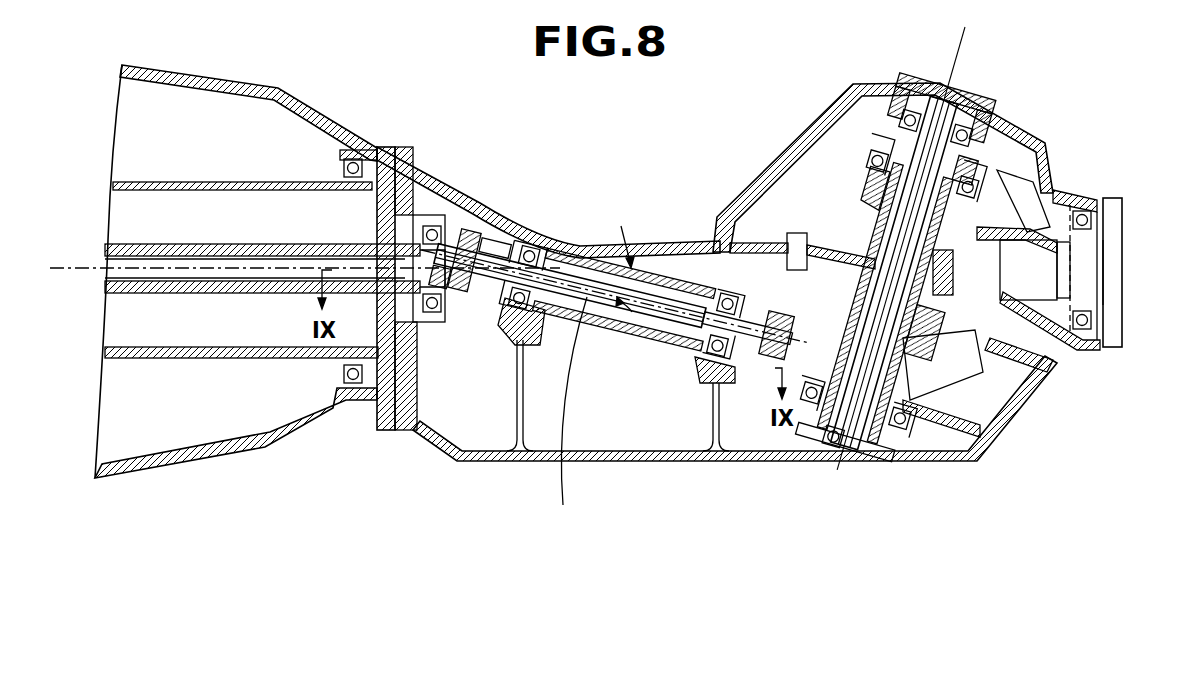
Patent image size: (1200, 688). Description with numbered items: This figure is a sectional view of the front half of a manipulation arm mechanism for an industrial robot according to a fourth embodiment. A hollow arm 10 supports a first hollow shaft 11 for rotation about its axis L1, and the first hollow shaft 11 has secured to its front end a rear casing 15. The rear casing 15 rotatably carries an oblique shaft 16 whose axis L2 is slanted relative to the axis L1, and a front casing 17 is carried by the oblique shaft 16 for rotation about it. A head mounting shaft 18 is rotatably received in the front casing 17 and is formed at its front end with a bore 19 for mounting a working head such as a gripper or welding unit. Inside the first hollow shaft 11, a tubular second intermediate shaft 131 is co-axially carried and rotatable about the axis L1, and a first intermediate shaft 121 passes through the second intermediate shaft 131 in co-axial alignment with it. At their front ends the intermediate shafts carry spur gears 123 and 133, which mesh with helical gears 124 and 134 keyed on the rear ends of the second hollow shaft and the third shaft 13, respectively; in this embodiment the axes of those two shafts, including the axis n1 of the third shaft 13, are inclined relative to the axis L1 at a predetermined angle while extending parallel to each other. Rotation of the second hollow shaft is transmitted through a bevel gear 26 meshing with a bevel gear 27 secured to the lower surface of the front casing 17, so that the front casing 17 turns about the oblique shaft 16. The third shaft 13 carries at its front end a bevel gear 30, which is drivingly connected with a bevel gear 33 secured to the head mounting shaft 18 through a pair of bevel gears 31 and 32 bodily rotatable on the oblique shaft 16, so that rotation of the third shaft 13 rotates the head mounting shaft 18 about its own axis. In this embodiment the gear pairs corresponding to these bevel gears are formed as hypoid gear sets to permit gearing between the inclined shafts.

The hollow arm 10 is at (200, 82).
The first hollow shaft 11 is at (300, 182).
The first intermediate shaft 121 is at (165, 256).
The second intermediate shaft 131 is at (103, 291).
The axis of the first hollow shaft L1 is at (72, 272).
The spur gear 123 is at (488, 246).
The helical gear 124 is at (538, 252).
The spur gear 133 is at (498, 295).
The helical gear 134 is at (452, 297).
The third shaft 13 is at (622, 320).
The axis of the third shaft n1 is at (557, 417).
The bevel gear 26 is at (735, 362).
The rear casing 15 is at (737, 462).
The oblique shaft 16 is at (862, 445).
The front casing 17 is at (833, 115).
The axis of the oblique shaft L2 is at (962, 48).
The bevel gear 32 is at (882, 183).
The bevel gear 30 is at (792, 338).
The bevel gear 33 is at (957, 349).
The bevel gear 31 is at (963, 364).
The bevel gear 27 is at (993, 362).
The head mounting shaft 18 is at (1113, 325).
The bore 19 is at (1110, 246).